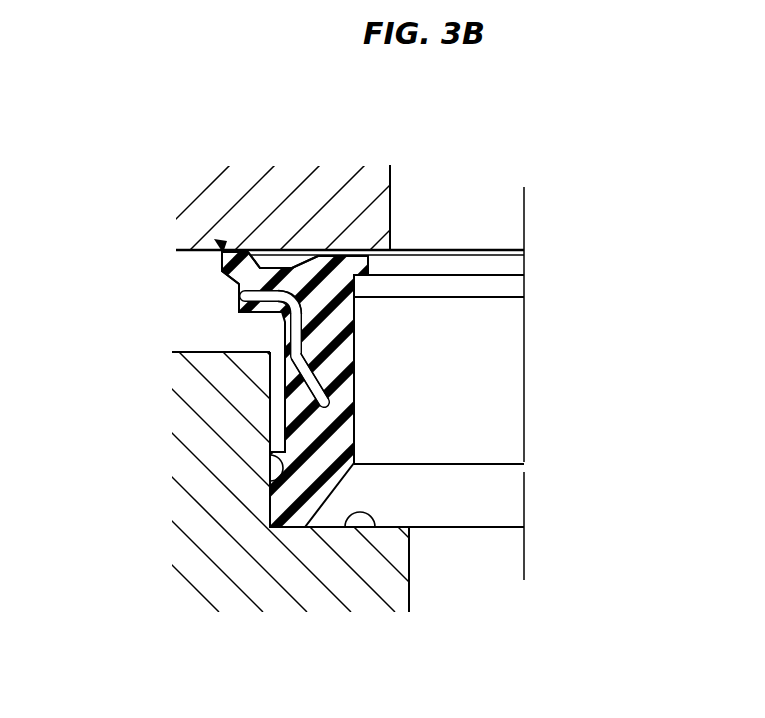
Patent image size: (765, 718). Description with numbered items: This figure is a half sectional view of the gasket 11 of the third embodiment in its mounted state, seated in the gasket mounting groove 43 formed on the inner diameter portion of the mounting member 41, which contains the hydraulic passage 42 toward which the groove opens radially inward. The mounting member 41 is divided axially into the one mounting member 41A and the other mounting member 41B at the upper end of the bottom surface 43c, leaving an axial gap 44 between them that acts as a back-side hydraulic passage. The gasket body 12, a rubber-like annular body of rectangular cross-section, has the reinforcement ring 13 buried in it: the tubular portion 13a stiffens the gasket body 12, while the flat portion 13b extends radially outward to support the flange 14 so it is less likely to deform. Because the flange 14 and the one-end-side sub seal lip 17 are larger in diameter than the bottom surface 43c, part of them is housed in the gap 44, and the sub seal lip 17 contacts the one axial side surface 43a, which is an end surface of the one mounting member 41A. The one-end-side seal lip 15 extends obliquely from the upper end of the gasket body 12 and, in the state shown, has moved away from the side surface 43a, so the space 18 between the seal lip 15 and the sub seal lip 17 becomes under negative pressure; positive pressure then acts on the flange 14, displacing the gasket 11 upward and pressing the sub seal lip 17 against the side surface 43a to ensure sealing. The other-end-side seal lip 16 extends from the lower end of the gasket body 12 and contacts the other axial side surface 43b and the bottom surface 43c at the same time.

The gasket 11 is at (222, 250).
The gasket body 12 is at (330, 372).
The reinforcement ring 13 is at (338, 320).
The tubular portion 13a is at (275, 398).
The flat portion 13b is at (235, 318).
The flange 14 is at (245, 290).
The one-end-side seal lip 15 is at (362, 250).
The other-end-side seal lip 16 is at (289, 503).
The one-end-side sub seal lip 17 is at (265, 262).
The space 18 is at (298, 264).
The mounting member 41 is at (178, 216).
The one mounting member 41A is at (182, 248).
The other mounting member 41B is at (220, 557).
The hydraulic passage 42 is at (474, 578).
The gasket mounting groove 43 is at (270, 455).
The one axial side surface 43a is at (376, 257).
The other axial side surface 43b is at (373, 528).
The bottom surface 43c is at (272, 484).
The gap 44 is at (275, 333).